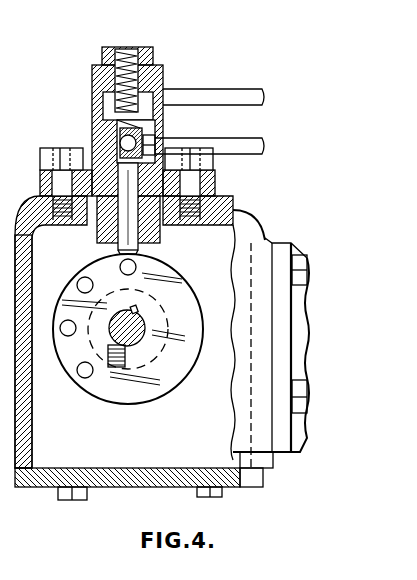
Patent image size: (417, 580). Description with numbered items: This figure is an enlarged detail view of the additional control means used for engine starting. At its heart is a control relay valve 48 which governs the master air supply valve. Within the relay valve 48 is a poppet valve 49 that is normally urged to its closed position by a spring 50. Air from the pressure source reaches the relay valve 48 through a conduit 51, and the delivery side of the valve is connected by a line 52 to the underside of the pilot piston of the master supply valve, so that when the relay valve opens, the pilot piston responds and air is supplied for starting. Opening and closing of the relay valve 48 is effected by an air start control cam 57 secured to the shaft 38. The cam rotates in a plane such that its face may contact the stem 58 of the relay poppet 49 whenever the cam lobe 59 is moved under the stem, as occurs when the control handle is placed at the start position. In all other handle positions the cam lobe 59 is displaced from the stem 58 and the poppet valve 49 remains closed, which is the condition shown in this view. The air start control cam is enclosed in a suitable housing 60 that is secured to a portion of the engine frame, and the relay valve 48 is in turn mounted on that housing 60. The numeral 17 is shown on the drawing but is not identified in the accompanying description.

The housing 17 is at (154, 348).
The shaft 38 is at (140, 343).
The control relay valve 48 is at (92, 100).
The poppet valve 49 is at (120, 116).
The spring 50 is at (153, 65).
The conduit 51 is at (222, 97).
The line 52 is at (248, 146).
The air start control cam 57 is at (185, 297).
The stem 58 is at (140, 246).
The cam lobe 59 is at (72, 267).
The housing 60 is at (252, 224).